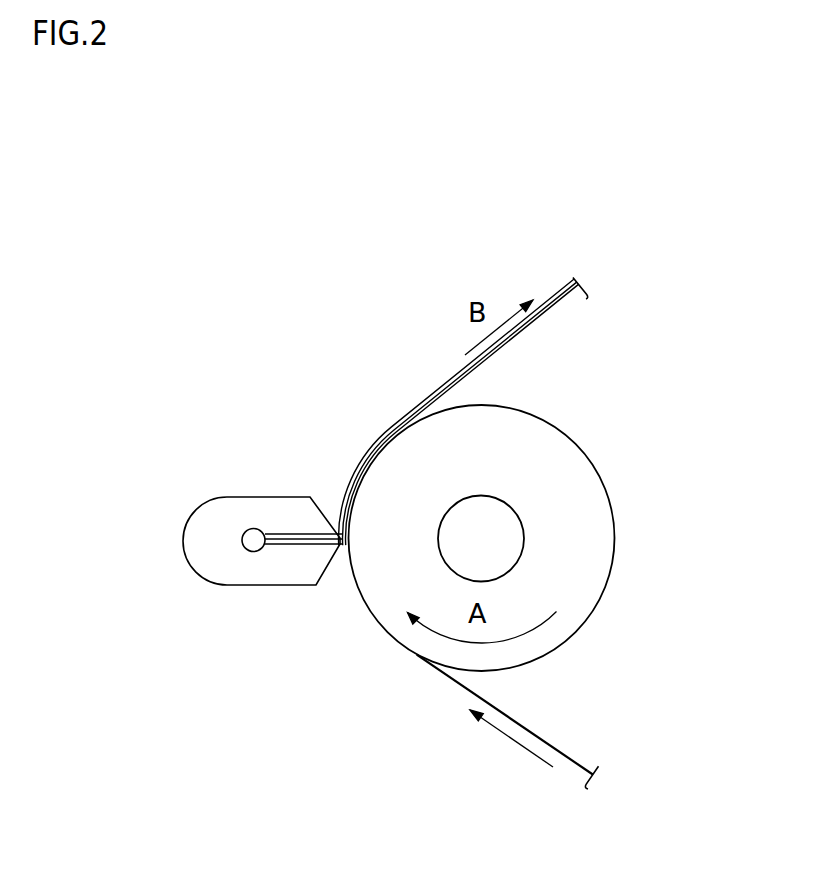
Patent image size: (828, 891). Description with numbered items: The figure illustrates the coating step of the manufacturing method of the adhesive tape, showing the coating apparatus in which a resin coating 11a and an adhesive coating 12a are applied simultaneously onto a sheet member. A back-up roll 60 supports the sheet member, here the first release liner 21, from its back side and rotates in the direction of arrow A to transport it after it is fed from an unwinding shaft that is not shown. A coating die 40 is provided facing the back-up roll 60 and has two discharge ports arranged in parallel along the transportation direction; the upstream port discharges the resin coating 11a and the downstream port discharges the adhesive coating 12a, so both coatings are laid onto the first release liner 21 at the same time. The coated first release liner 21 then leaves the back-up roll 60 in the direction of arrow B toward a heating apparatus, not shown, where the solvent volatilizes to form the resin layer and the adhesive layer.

The back-up roll 60 is at (593, 525).
The coating die 40 is at (267, 497).
The first release liner 21 is at (555, 313).
The adhesive coating 12a is at (447, 380).
The resin coating 11a is at (497, 360).